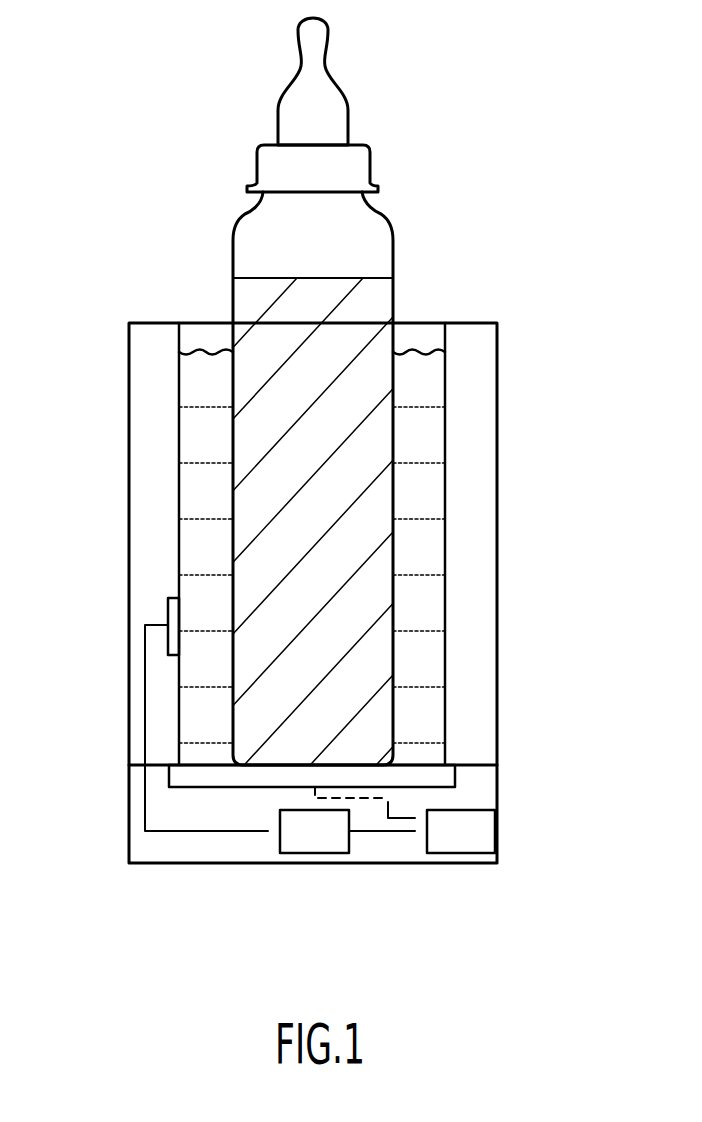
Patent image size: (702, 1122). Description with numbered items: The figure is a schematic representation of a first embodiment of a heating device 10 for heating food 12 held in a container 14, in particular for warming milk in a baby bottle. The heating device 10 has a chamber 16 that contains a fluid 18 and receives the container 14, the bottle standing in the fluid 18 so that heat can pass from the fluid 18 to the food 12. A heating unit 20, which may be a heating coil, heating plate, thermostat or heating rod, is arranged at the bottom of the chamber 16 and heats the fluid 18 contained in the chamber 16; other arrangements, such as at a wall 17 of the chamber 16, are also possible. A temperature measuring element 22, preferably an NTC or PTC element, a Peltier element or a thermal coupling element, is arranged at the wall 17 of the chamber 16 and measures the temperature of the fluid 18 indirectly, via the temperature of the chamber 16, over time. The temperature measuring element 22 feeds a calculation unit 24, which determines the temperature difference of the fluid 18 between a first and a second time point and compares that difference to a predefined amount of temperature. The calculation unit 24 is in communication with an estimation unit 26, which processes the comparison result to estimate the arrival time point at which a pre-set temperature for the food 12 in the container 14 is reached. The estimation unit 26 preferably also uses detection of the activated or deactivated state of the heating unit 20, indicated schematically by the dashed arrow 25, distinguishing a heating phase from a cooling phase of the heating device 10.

The heating device 10 is at (95, 303).
The food 12 is at (377, 308).
The container 14 is at (393, 247).
The chamber 16 is at (497, 487).
The wall 17 is at (179, 447).
The fluid 18 is at (423, 383).
The heating unit 20 is at (447, 773).
The temperature measuring element 22 is at (172, 607).
The calculation unit 24 is at (312, 853).
The dashed arrow 25 is at (400, 820).
The estimation unit 26 is at (463, 853).